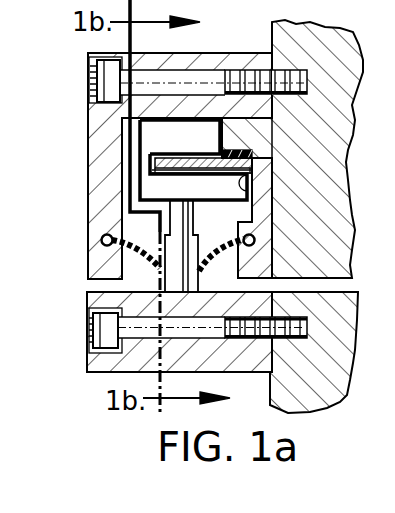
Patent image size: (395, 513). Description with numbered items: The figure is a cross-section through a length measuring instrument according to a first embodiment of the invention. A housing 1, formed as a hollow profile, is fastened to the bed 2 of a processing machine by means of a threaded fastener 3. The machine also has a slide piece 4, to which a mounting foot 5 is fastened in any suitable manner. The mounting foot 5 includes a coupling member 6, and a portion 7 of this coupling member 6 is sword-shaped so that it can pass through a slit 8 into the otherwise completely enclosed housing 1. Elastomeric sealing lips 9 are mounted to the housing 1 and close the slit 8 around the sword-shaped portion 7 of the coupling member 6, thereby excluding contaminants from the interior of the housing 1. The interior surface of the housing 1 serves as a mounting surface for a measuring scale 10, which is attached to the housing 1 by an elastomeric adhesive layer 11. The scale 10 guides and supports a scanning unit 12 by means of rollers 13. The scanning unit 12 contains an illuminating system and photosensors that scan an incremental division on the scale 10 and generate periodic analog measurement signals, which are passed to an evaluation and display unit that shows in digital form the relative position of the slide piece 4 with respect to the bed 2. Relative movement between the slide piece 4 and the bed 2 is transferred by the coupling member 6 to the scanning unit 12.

The housing 1 is at (247, 143).
The bed 2 is at (327, 43).
The threaded fastener 3 is at (110, 80).
The slide piece 4 is at (328, 390).
The mounting foot 5 is at (88, 298).
The coupling member 6 is at (175, 222).
The sword-shaped portion 7 is at (165, 270).
The slit 8 is at (222, 281).
The elastomeric sealing lips 9 is at (101, 240).
The measuring scale 10 is at (252, 160).
The elastomeric adhesive layer 11 is at (254, 151).
The scanning unit 12 is at (252, 172).
The rollers 13 is at (160, 183).